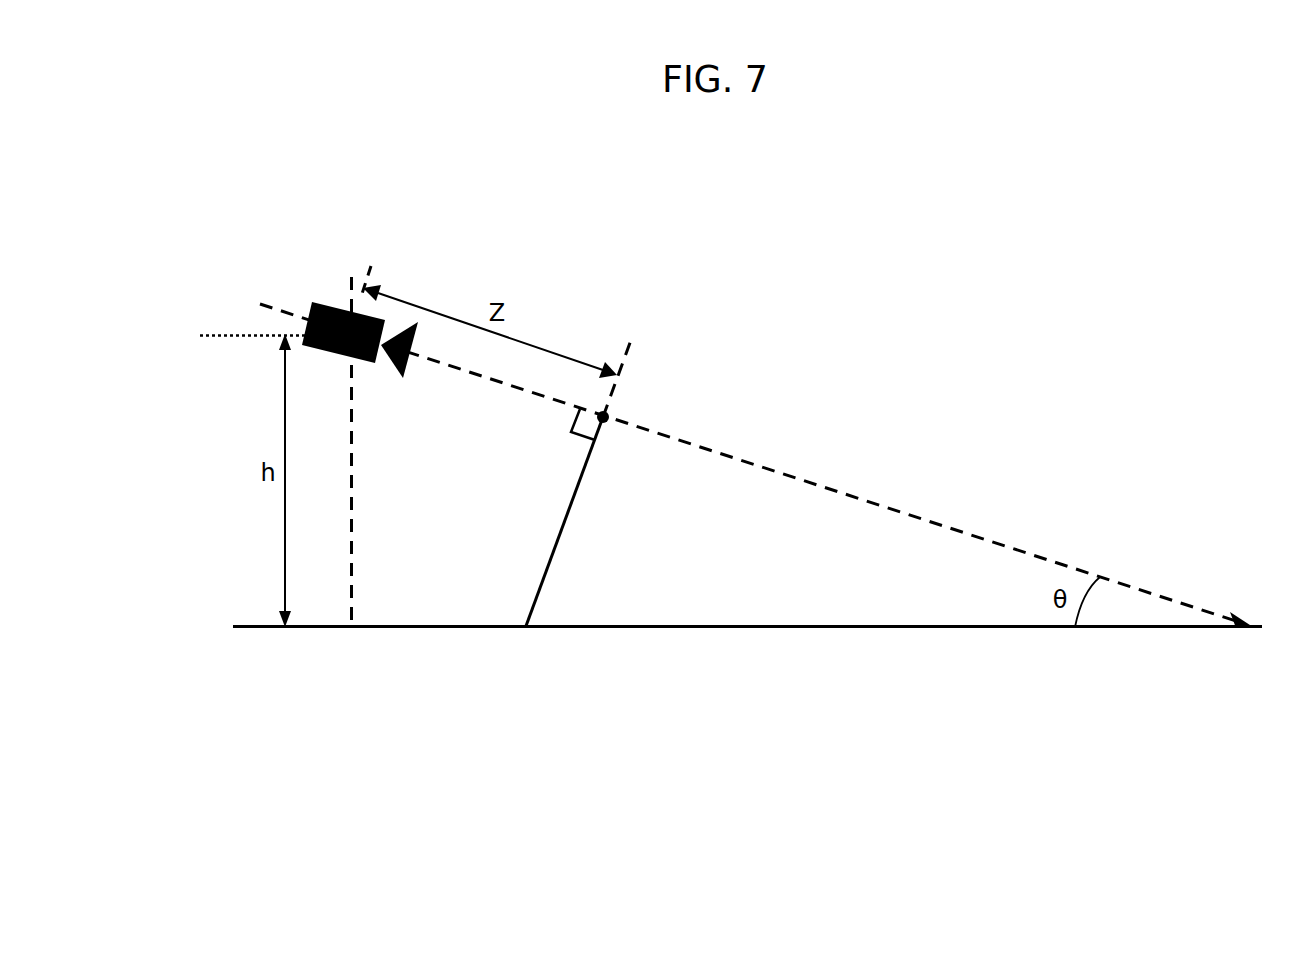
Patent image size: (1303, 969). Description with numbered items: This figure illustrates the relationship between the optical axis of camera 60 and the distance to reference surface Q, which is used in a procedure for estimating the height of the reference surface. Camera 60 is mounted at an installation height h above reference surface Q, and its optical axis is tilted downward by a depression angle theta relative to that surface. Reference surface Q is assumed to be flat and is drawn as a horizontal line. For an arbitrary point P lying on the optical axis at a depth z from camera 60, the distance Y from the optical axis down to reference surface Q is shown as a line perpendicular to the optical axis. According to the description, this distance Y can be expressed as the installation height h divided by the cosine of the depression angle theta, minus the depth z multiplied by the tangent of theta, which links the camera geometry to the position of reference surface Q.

The camera 60 is at (318, 301).
The arbitrary point P is at (608, 412).
The distance from the optical axis to the reference surface Y is at (570, 503).
The reference surface Q is at (680, 628).